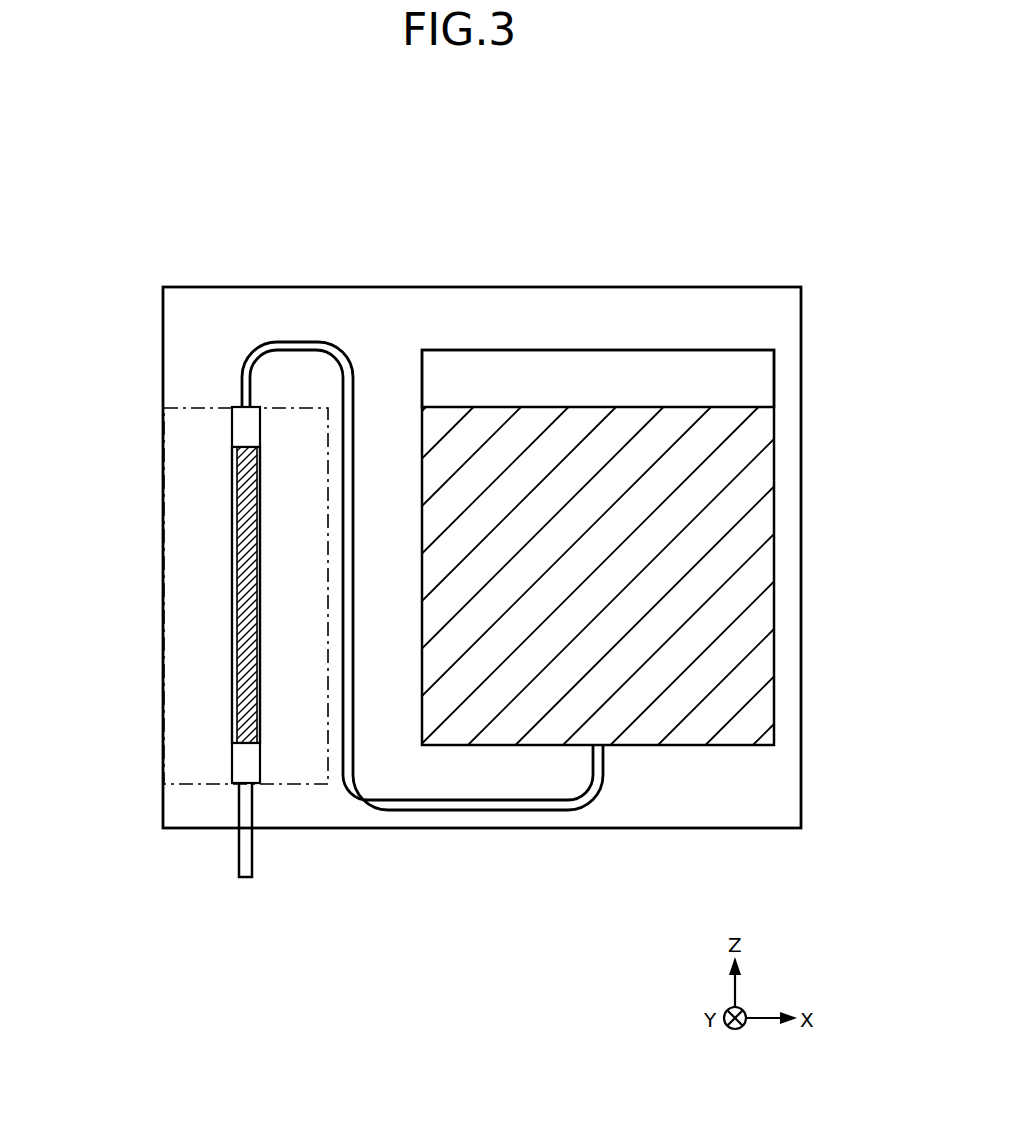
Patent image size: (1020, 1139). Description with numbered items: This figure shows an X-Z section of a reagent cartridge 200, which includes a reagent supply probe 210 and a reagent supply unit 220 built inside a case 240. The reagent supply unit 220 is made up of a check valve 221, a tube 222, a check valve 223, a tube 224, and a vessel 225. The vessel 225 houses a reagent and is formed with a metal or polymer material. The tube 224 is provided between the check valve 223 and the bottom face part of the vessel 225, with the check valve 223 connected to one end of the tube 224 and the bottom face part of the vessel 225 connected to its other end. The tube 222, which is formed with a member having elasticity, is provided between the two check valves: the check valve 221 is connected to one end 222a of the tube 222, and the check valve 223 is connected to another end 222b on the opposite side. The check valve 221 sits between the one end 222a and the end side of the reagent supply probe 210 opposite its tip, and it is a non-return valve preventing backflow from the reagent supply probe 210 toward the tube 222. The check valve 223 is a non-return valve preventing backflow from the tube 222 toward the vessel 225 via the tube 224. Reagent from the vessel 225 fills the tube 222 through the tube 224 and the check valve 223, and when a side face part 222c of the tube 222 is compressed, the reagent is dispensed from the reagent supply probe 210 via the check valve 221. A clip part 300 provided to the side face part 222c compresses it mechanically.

The reagent cartridge 200 is at (470, 165).
The case 240 is at (801, 312).
The reagent supply unit 220 is at (560, 300).
The vessel 225 is at (774, 373).
The tube 224 is at (297, 343).
The clip part 300 is at (164, 559).
The check valve 223 is at (232, 430).
The tube 222 is at (232, 498).
The other end of the tube 222b is at (232, 467).
The side face part 222c is at (232, 600).
The one end of the tube 222a is at (232, 721).
The check valve 221 is at (232, 765).
The reagent supply probe 210 is at (239, 866).